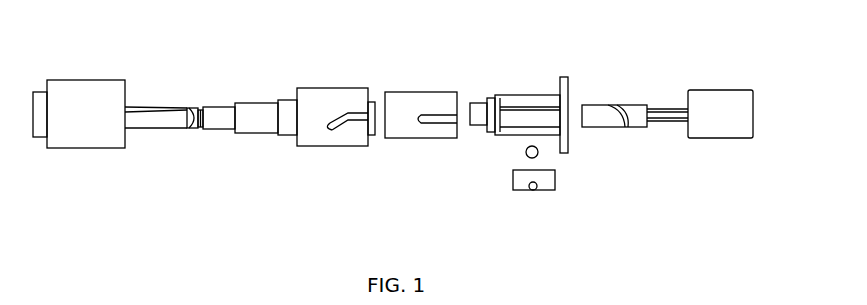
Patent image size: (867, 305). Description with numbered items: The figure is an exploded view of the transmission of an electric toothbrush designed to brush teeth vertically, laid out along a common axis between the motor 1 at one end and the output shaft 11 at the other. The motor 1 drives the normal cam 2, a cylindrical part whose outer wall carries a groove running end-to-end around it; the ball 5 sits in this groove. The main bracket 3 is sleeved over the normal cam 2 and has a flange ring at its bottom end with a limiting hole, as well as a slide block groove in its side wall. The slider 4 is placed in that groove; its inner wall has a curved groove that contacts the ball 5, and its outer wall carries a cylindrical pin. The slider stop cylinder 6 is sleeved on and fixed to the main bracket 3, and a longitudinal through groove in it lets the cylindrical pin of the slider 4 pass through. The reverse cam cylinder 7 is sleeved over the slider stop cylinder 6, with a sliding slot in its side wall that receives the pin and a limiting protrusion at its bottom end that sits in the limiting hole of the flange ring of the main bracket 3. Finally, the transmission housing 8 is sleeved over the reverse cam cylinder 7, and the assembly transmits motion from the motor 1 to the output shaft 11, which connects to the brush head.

The motor 1 is at (730, 108).
The normal cam 2 is at (593, 118).
The main bracket 3 is at (503, 102).
The slider 4 is at (550, 173).
The ball 5 is at (527, 158).
The slider stop cylinder 6 is at (400, 118).
The reverse cam cylinder 7 is at (303, 122).
The transmission housing 8 is at (77, 115).
The output shaft 11 is at (168, 108).